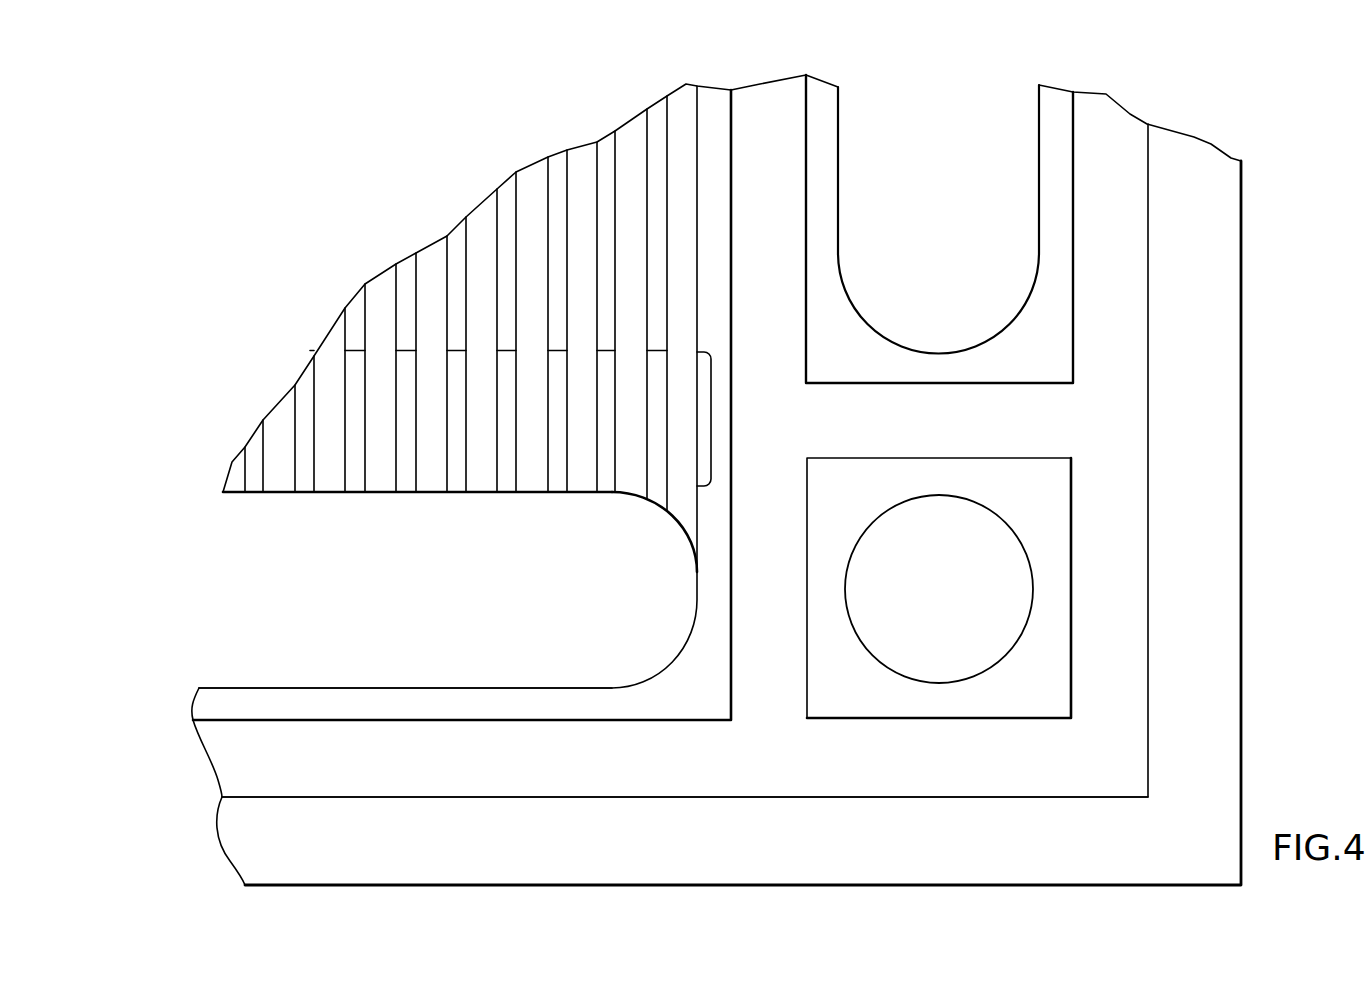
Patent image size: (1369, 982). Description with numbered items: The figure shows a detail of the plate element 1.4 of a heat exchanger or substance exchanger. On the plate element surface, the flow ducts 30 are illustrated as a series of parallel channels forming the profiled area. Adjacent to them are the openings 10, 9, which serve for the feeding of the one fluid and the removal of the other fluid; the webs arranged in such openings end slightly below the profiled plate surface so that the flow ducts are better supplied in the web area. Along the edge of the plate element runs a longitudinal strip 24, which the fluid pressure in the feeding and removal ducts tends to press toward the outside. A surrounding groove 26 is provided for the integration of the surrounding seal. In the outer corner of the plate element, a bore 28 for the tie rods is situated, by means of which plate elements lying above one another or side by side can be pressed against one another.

The plate element 1.4 is at (1262, 414).
The opening 9 is at (277, 533).
The opening 10 is at (1014, 159).
The longitudinal strip 24 is at (1220, 252).
The surrounding groove 26 is at (232, 745).
The bore 28 is at (984, 591).
The flow ducts 30 is at (333, 334).